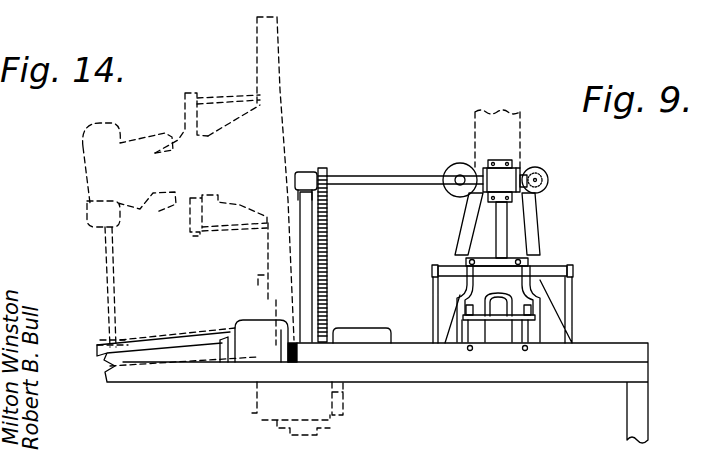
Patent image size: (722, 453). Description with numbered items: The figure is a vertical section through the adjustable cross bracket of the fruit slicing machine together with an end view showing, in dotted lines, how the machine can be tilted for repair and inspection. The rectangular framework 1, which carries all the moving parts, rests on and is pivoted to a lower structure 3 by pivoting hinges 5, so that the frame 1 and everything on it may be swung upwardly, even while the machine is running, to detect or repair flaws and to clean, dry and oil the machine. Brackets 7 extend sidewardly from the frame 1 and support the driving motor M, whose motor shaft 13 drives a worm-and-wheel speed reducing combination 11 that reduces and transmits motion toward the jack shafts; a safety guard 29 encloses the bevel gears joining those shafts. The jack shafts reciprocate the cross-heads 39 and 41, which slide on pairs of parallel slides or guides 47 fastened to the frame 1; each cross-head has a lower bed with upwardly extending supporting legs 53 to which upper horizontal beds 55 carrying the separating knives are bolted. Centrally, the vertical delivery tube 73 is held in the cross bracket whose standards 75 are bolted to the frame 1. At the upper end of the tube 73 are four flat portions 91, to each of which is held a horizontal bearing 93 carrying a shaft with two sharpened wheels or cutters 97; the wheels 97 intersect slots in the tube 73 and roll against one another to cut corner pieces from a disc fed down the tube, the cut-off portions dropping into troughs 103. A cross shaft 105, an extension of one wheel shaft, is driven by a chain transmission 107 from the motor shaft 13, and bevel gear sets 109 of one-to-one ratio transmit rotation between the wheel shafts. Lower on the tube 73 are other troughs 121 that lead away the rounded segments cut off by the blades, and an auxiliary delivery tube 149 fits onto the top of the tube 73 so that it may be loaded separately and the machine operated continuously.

In FIG. 9, the rectangular framework 1 is at (641, 353).
In FIG. 9, the lower structure 3 is at (627, 427).
In FIG. 9, the pivoting hinges 5 is at (293, 362).
In FIG. 14, the brackets 7 is at (345, 410).
In FIG. 9, the worm-and-wheel speed reducing combination 11 is at (332, 323).
In FIG. 9, the motor shaft 13 is at (300, 352).
In FIG. 14, the safety guard 29 is at (258, 283).
In FIG. 9, the safety guard 29 is at (363, 332).
In FIG. 9, the cross-head 39 is at (466, 262).
In FIG. 14, the cross-head 41 is at (187, 93).
In FIG. 9, the cross-head 41 is at (434, 285).
In FIG. 9, the parallel slides or guides 47 is at (470, 351).
In FIG. 14, the supporting legs 53 is at (214, 225).
In FIG. 9, the supporting legs 53 is at (540, 300).
In FIG. 9, the upper horizontal beds 55 is at (550, 268).
In FIG. 9, the vertical delivery tube 73 is at (508, 224).
In FIG. 9, the standards 75 is at (540, 326).
In FIG. 9, the flat portions 91 is at (486, 160).
In FIG. 9, the horizontal bearing 93 is at (498, 175).
In FIG. 14, the sharpened wheels or cutters 97 is at (107, 125).
In FIG. 9, the sharpened wheels or cutters 97 is at (448, 171).
In FIG. 14, the troughs 103 is at (149, 214).
In FIG. 9, the troughs 103 is at (470, 200).
In FIG. 9, the cross shaft 105 is at (362, 185).
In FIG. 9, the chain transmission 107 is at (320, 170).
In FIG. 9, the bevel gear sets 109 is at (549, 180).
In FIG. 9, the troughs 121 is at (455, 338).
In FIG. 9, the auxiliary delivery tube 149 is at (500, 112).
In FIG. 14, the driving motor M is at (243, 325).